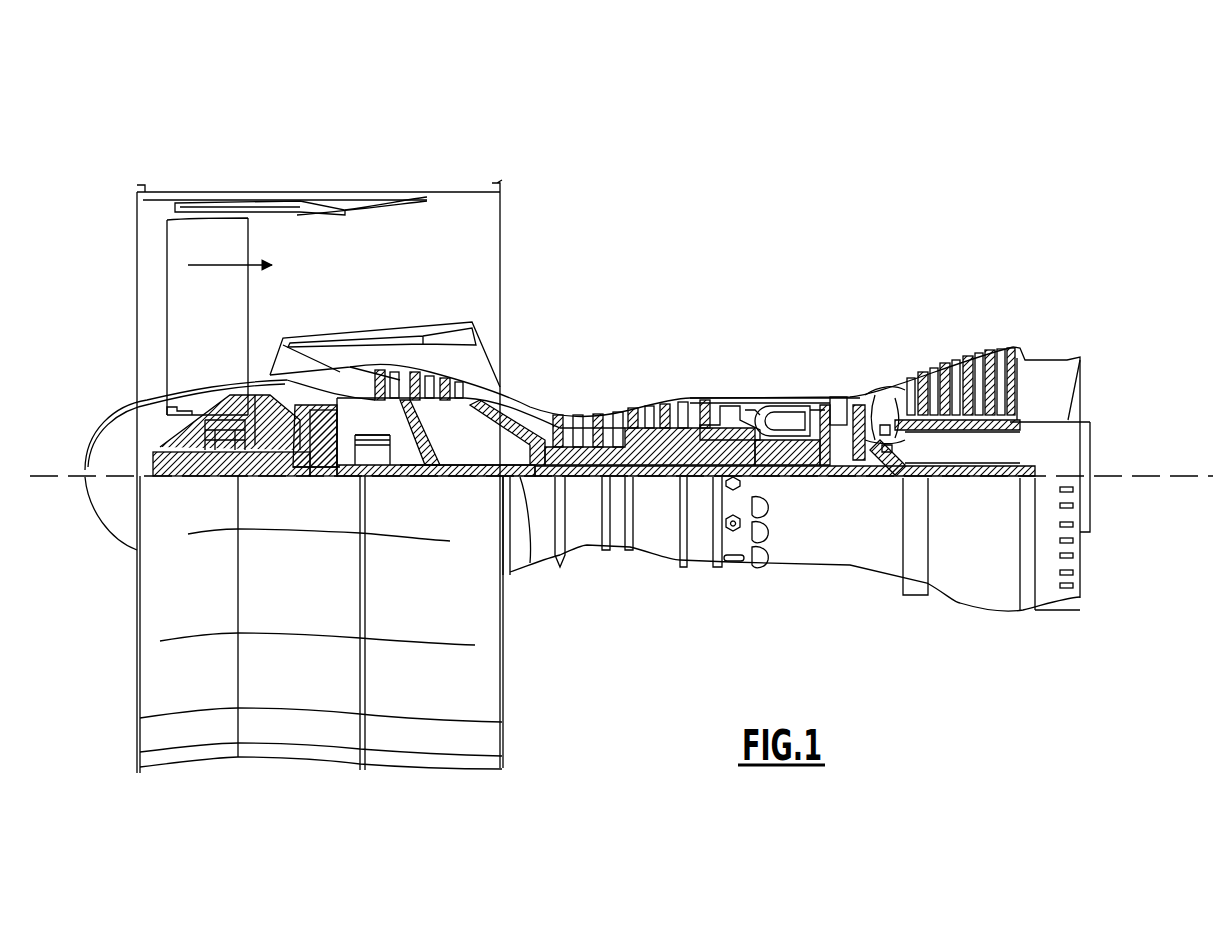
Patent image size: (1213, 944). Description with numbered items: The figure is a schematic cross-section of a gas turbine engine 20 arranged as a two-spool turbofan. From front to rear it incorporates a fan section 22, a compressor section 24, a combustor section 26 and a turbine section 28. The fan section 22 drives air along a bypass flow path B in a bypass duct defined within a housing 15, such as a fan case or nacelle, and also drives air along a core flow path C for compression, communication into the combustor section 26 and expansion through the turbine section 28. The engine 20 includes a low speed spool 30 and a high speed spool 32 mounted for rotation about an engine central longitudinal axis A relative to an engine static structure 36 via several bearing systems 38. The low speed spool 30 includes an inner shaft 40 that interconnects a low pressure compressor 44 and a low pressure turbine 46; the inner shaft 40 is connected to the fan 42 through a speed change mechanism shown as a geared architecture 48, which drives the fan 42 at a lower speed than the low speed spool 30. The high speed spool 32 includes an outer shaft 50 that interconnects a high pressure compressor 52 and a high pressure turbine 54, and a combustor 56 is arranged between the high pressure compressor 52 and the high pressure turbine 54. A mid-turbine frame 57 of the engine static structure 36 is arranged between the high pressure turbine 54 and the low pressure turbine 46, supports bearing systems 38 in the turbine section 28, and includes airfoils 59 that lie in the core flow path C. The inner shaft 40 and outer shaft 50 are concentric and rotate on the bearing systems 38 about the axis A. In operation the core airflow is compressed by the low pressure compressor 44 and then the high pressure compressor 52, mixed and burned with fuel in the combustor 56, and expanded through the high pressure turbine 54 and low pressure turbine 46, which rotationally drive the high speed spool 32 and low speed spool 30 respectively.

The housing 15 is at (320, 200).
The gas turbine engine 20 is at (780, 242).
The fan section 22 is at (248, 183).
The compressor section 24 is at (550, 382).
The combustor section 26 is at (775, 370).
The turbine section 28 is at (918, 336).
The low speed spool 30 is at (658, 482).
The high speed spool 32 is at (700, 430).
The engine static structure 36 is at (699, 568).
The bearing systems 38 is at (455, 477).
The inner shaft 40 is at (530, 563).
The fan 42 is at (222, 320).
The low pressure compressor 44 is at (418, 385).
The low pressure turbine 46 is at (967, 350).
The geared architecture 48 is at (320, 477).
The outer shaft 50 is at (785, 478).
The high pressure compressor 52 is at (625, 405).
The high pressure turbine 54 is at (840, 400).
The combustor 56 is at (778, 418).
The mid-turbine frame 57 is at (879, 390).
The airfoils 59 is at (918, 450).
The engine central longitudinal axis A is at (1168, 476).
The bypass flow path B is at (225, 265).
The core flow path C is at (322, 374).